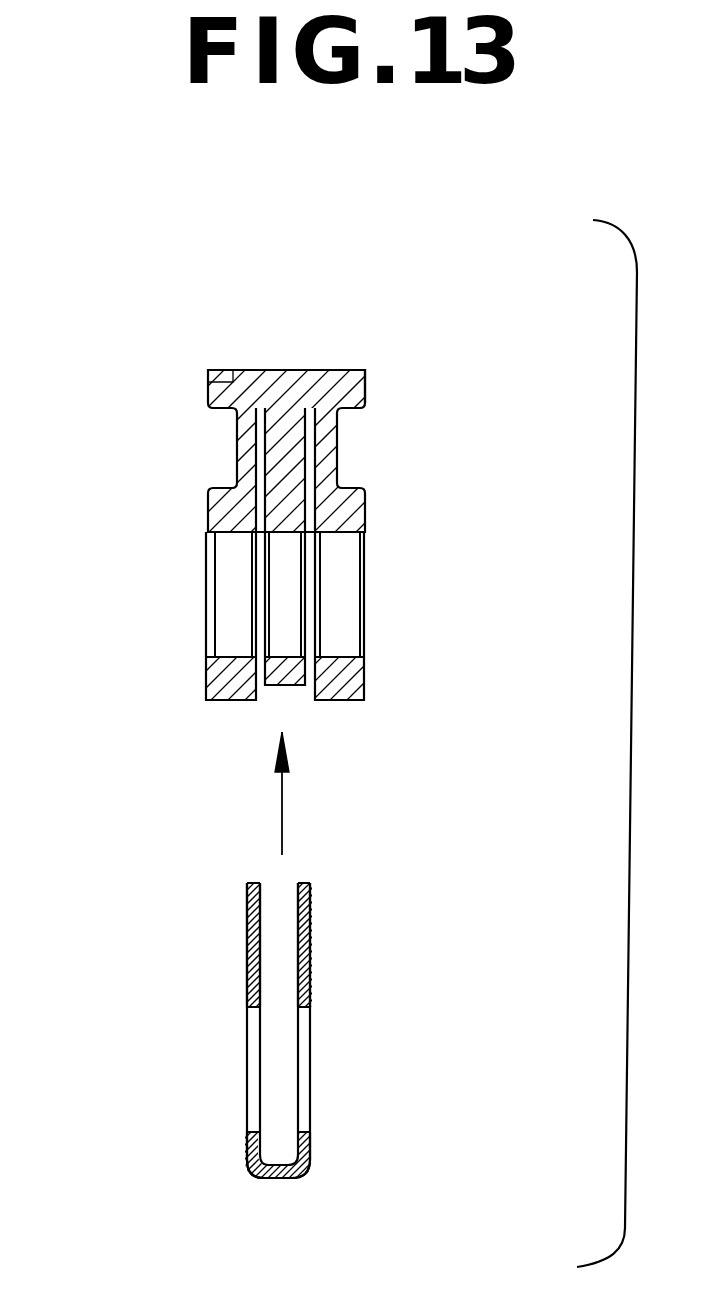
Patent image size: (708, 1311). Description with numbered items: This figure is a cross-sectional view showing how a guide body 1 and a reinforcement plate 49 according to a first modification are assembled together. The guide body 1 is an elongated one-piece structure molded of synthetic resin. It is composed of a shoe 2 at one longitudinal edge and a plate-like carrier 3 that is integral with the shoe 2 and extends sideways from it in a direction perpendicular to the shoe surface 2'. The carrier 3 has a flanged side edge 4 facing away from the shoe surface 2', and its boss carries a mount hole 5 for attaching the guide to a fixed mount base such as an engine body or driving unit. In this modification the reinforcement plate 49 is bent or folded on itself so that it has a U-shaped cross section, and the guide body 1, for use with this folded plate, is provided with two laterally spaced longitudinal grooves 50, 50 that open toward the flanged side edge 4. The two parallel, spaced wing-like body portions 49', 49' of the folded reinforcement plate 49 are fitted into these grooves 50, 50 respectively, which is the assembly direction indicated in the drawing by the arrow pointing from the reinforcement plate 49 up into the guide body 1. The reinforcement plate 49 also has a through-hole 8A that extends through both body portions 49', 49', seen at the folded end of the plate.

The guide body 1 is at (412, 375).
The shoe 2 is at (286, 328).
The shoe surface 2' is at (197, 315).
The carrier 3 is at (284, 431).
The longitudinal grooves 50 is at (258, 443).
The mount hole 5 is at (336, 657).
The flanged side edge 4 is at (343, 682).
The reinforcement plate 49 is at (333, 1023).
The wing-like body portions 49' is at (291, 981).
The through-hole 8A is at (310, 1132).